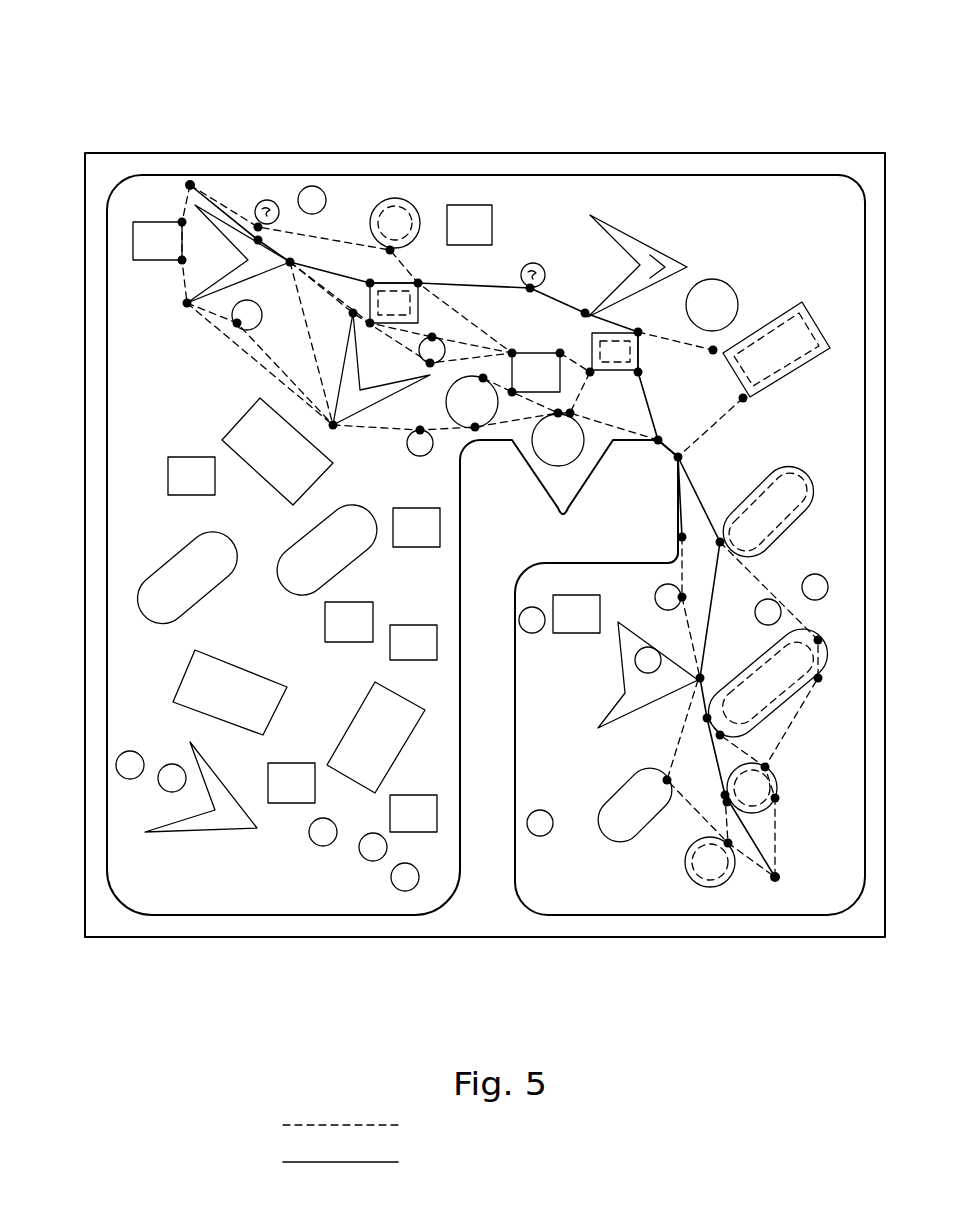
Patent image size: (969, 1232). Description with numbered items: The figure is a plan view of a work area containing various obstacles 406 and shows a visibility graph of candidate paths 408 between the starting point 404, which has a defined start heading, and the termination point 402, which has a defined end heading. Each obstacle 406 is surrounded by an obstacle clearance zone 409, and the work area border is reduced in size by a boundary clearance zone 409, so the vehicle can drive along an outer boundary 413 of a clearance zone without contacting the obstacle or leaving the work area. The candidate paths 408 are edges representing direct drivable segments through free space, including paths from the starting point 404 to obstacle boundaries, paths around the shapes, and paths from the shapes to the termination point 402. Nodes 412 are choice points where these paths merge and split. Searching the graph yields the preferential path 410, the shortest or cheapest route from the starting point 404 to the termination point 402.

The termination point 402 is at (190, 185).
The starting point 404 is at (775, 877).
The obstacle 406 is at (396, 212).
The candidate paths 408 is at (338, 193).
The clearance zone 409 is at (418, 213).
The preferential path 410 is at (505, 285).
The node 412 is at (682, 457).
The outer boundary 413 is at (383, 174).